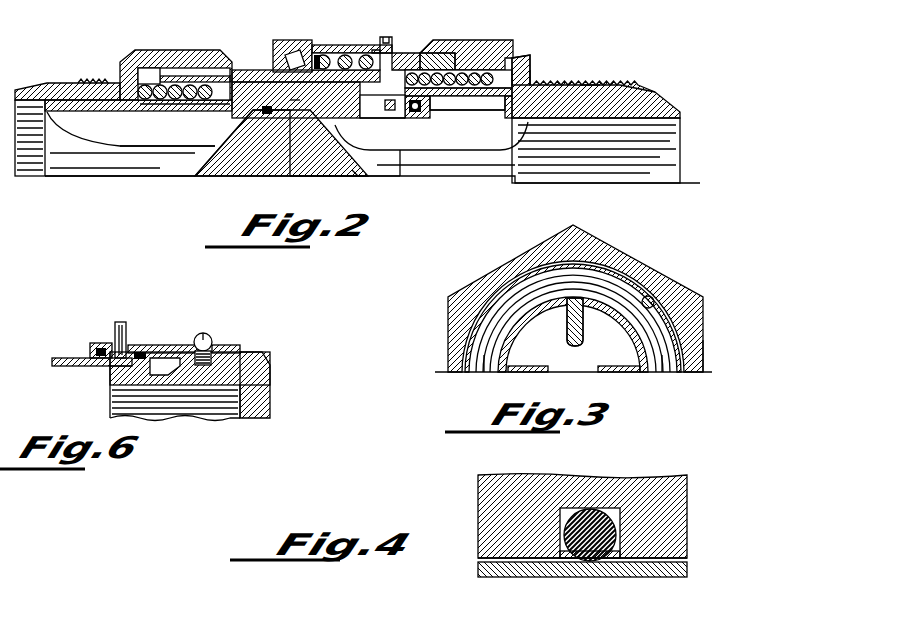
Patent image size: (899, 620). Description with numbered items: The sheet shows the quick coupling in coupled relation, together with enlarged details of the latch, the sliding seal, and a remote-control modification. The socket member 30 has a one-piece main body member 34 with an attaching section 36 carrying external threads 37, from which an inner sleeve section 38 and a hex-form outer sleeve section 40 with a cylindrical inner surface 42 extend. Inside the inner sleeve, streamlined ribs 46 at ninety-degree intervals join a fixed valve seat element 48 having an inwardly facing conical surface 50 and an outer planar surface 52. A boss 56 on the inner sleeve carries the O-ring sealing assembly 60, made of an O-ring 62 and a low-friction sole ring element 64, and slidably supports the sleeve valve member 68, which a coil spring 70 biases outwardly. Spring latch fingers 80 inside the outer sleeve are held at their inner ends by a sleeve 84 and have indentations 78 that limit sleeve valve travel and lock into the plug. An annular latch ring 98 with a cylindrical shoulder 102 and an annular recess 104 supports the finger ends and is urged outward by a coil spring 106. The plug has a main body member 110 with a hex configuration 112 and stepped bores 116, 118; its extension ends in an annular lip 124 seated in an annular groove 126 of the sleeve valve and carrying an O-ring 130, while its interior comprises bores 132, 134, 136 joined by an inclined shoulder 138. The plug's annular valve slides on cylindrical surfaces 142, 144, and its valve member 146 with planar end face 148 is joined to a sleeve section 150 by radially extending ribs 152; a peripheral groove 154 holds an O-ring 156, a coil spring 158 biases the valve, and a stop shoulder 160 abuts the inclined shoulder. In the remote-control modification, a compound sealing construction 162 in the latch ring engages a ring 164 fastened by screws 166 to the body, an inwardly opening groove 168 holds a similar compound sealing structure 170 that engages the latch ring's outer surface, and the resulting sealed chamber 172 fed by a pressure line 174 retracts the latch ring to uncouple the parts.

In FIG. 3, the valved socket member 30 is at (619, 236).
In FIG. 6, the valved socket member 30 is at (271, 361).
In FIG. 2, the main body member 34 is at (562, 85).
In FIG. 6, the main body member 34 is at (214, 390).
In FIG. 2, the attaching section 36 is at (595, 86).
In FIG. 2, the external threads 37 is at (630, 86).
In FIG. 2, the inner annular sleeve section 38 is at (470, 110).
In FIG. 3, the inner annular sleeve section 38 is at (690, 360).
In FIG. 2, the outer annular sleeve section 40 is at (498, 70).
In FIG. 3, the outer annular sleeve section 40 is at (462, 296).
In FIG. 2, the cylindrical inner surface 42 is at (465, 73).
In FIG. 3, the cylindrical inner surface 42 is at (493, 290).
In FIG. 2, the ribs 46 is at (445, 152).
In FIG. 3, the ribs 46 is at (530, 366).
In FIG. 2, the fixed valve seat element 48 is at (347, 176).
In FIG. 3, the fixed valve seat element 48 is at (580, 372).
In FIG. 2, the inwardly facing conical surface 50 is at (372, 176).
In FIG. 2, the outer planar surface 52 is at (288, 176).
In FIG. 3, the outwardly projecting boss 56 is at (462, 352).
In FIG. 4, the O-ring sealing assembly 60 is at (556, 560).
In FIG. 2, the O-ring 62 is at (413, 118).
In FIG. 4, the O-ring 62 is at (593, 509).
In FIG. 4, the sole ring element 64 is at (586, 560).
In FIG. 3, the sleeve valve member 68 is at (630, 286).
In FIG. 2, the coil spring 70 is at (520, 62).
In FIG. 3, the coil spring 70 is at (656, 300).
In FIG. 2, the inwardly projecting indentation 78 is at (345, 53).
In FIG. 2, the spring latch fingers 80 is at (440, 73).
In FIG. 3, the spring latch fingers 80 is at (535, 262).
In FIG. 2, the sleeve 84 is at (531, 80).
In FIG. 2, the annular latch ring 98 is at (386, 37).
In FIG. 6, the annular latch ring 98 is at (62, 368).
In FIG. 2, the inwardly facing annular cylindrical shoulder 102 is at (330, 45).
In FIG. 2, the inwardly facing annular recess 104 is at (298, 50).
In FIG. 2, the coil spring 106 is at (374, 50).
In FIG. 2, the main body member 110 is at (213, 184).
In FIG. 2, the hex configuration 112 is at (210, 53).
In FIG. 2, the stepped bore 116 is at (72, 99).
In FIG. 2, the stepped bore 118 is at (148, 68).
In FIG. 2, the annular lip 124 is at (400, 56).
In FIG. 2, the annular groove 126 is at (438, 61).
In FIG. 2, the O-ring 130 is at (300, 99).
In FIG. 2, the cylindrical bore 132 is at (258, 70).
In FIG. 2, the cylindrical bore 134 is at (281, 143).
In FIG. 2, the cylindrical bore 136 is at (388, 118).
In FIG. 2, the inclined shoulder 138 is at (365, 122).
In FIG. 2, the cylindrical surface 142 is at (95, 113).
In FIG. 2, the cylindrical surface 144 is at (226, 74).
In FIG. 2, the valve member 146 is at (247, 176).
In FIG. 2, the planar end face 148 is at (296, 178).
In FIG. 2, the sleeve section 150 is at (150, 112).
In FIG. 2, the radially extending ribs 152 is at (200, 136).
In FIG. 2, the outwardly opening peripheral groove 154 is at (276, 120).
In FIG. 2, the O-ring 156 is at (275, 102).
In FIG. 2, the coil spring 158 is at (188, 84).
In FIG. 2, the stop shoulder 160 is at (285, 100).
In FIG. 6, the stop shoulder 160 is at (150, 352).
In FIG. 6, the compound sealing construction 162 is at (140, 345).
In FIG. 6, the ring 164 is at (232, 346).
In FIG. 6, the screws 166 is at (208, 334).
In FIG. 6, the inwardly opening groove 168 is at (93, 345).
In FIG. 6, the seal 170 is at (101, 345).
In FIG. 6, the annular expansible sealed chamber 172 is at (112, 368).
In FIG. 6, the pressure line 174 is at (125, 325).